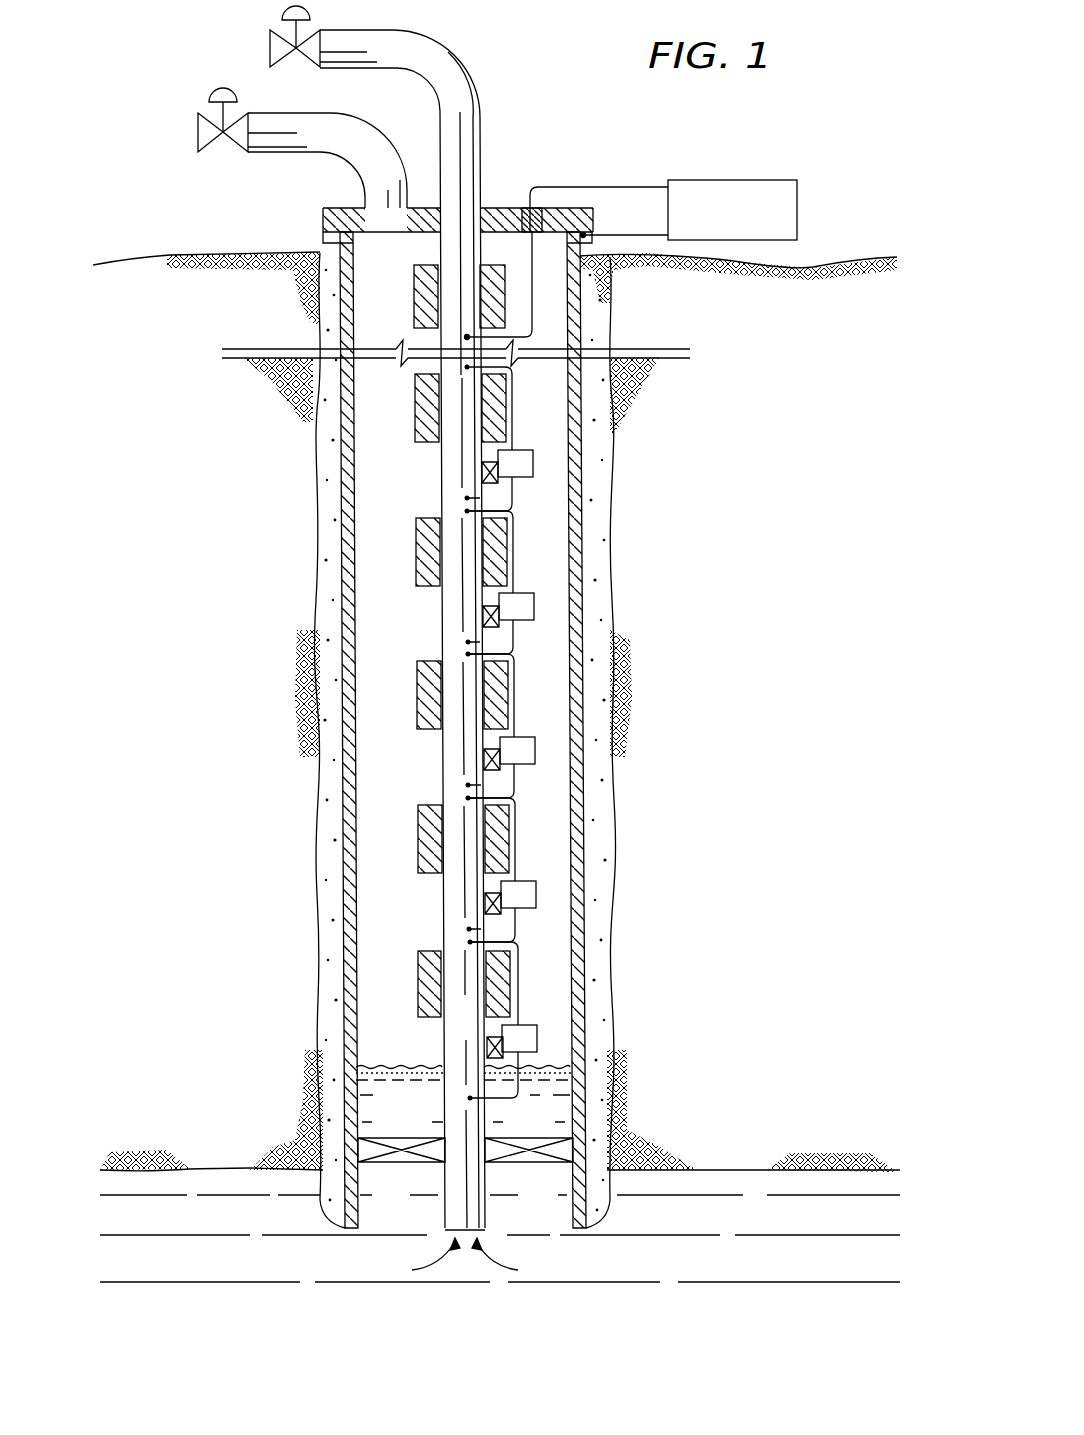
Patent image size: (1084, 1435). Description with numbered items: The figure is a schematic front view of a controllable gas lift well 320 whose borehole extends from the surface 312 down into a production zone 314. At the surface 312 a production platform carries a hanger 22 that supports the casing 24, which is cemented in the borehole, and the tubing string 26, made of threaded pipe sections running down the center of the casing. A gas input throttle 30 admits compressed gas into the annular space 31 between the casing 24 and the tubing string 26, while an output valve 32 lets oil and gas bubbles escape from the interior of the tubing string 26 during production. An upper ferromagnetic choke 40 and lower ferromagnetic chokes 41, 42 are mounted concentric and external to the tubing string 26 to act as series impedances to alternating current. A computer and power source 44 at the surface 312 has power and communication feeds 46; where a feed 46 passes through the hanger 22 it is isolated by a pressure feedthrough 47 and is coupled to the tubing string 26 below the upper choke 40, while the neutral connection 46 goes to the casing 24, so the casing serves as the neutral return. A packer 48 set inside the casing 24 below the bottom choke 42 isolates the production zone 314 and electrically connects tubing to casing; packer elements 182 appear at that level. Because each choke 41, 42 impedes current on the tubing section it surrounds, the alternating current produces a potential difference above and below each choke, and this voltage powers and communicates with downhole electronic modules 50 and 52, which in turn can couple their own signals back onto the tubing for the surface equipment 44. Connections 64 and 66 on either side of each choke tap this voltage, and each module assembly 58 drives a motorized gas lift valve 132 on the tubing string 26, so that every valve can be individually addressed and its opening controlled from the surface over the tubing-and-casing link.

The hanger 22 is at (323, 213).
The casing 24 is at (348, 325).
The tubing string 26 is at (440, 253).
The gas input throttle 30 is at (190, 125).
The annular space 31 is at (396, 331).
The output valve 32 is at (262, 45).
The upper ferromagnetic choke 40 is at (414, 297).
The lower ferromagnetic choke 41 is at (415, 402).
The lower ferromagnetic choke 42 is at (418, 1000).
The computer and power source 44 is at (747, 222).
The power and communication feed 46 is at (607, 185).
The pressure feedthrough 47 is at (525, 207).
The packer 48 is at (397, 1163).
The downhole electronic module 50 is at (522, 450).
The downhole electronic module 52 is at (522, 1025).
The module assembly 58 is at (563, 464).
The first conductor connection 64 is at (453, 363).
The second conductor connection 66 is at (453, 494).
The motorized gas lift valve 132 is at (490, 483).
The packer 182 is at (421, 1134).
The surface 312 is at (840, 258).
The production zone 314 is at (740, 1167).
The gas lift well 320 is at (548, 132).